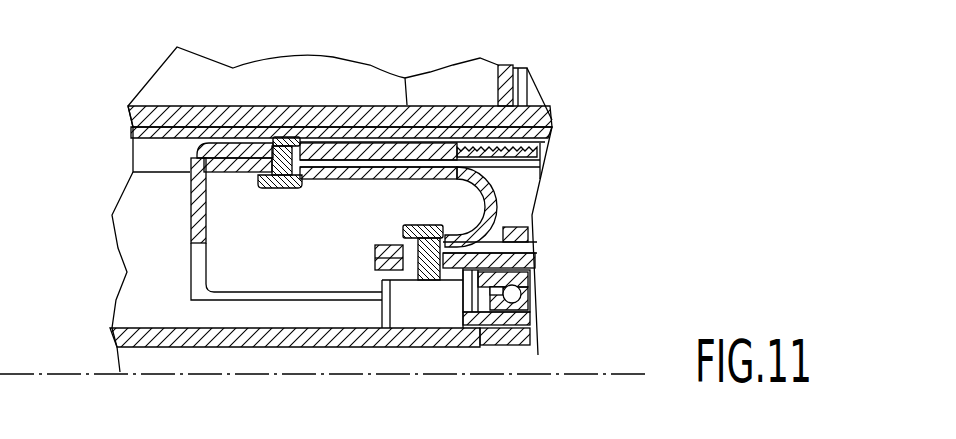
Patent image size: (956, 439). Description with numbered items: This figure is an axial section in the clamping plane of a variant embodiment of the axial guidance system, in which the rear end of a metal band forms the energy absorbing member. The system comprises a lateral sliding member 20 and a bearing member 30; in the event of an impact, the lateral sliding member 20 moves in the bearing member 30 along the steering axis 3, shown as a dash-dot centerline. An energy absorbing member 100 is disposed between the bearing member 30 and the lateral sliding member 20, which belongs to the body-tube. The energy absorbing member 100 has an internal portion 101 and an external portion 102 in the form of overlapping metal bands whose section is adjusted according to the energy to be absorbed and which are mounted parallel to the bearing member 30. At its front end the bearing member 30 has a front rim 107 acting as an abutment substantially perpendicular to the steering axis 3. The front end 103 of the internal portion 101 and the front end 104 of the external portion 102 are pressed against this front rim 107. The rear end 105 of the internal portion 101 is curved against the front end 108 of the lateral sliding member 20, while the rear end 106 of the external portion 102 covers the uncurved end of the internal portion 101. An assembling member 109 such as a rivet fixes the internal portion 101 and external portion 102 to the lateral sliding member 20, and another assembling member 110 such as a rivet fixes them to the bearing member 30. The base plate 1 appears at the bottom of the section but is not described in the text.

The base plate 1 is at (436, 346).
The steering axis 3 is at (593, 373).
The lateral sliding member 20 is at (540, 251).
The bearing member 30 is at (437, 158).
The energy absorbing member 100 is at (488, 206).
The internal portion 101 is at (350, 155).
The external portion 102 is at (380, 175).
The front end of the internal portion 103 is at (192, 162).
The front end of the external portion 104 is at (192, 185).
The rear end of the internal portion 105 is at (386, 248).
The rear end of the external portion 106 is at (401, 235).
The front rim 107 is at (192, 215).
The front end of the lateral sliding member 108 is at (412, 292).
The assembling member 109 is at (424, 224).
The assembling member 110 is at (276, 137).